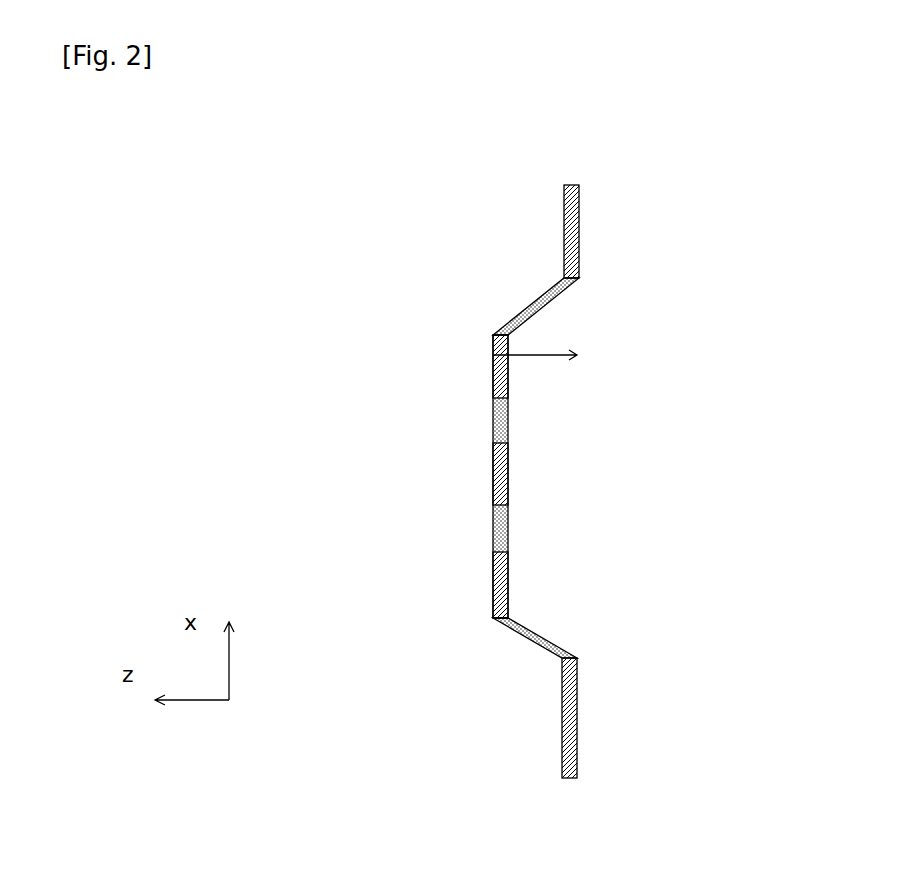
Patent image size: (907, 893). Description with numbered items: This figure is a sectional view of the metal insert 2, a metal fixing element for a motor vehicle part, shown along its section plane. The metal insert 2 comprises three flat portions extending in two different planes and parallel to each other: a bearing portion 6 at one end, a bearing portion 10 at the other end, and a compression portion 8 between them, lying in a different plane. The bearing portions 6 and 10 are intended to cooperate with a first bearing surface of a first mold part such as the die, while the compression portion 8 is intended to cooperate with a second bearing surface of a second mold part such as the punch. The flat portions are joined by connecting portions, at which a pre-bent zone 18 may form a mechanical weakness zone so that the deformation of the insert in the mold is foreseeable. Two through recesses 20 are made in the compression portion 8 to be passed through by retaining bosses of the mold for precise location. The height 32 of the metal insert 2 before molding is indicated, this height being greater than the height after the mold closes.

The metal insert 2 is at (522, 481).
The bearing portion 6 is at (556, 223).
The compression portion 8 is at (596, 476).
The bearing portion 10 is at (554, 744).
The pre-bent zone 18 is at (550, 302).
The through recess 20 is at (509, 423).
The height 32 is at (512, 363).